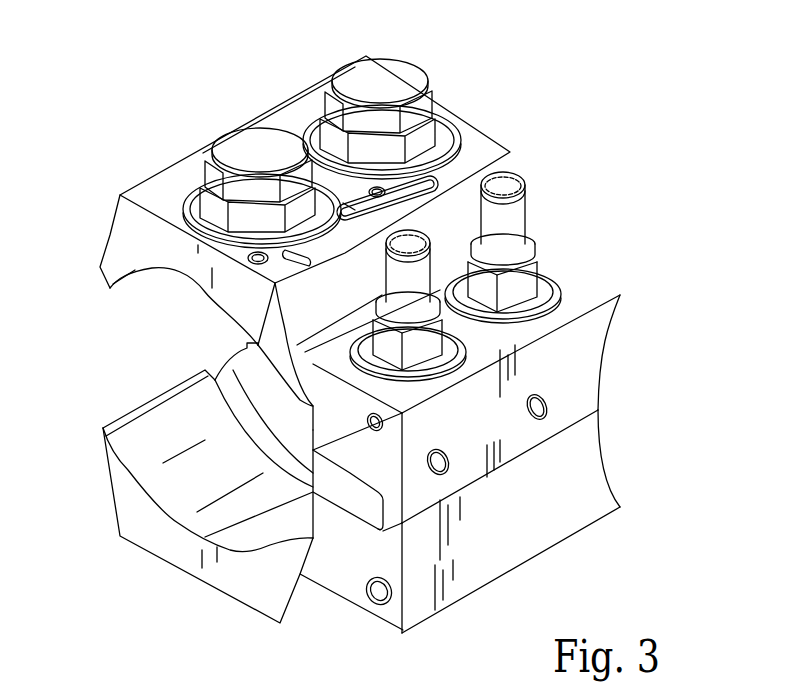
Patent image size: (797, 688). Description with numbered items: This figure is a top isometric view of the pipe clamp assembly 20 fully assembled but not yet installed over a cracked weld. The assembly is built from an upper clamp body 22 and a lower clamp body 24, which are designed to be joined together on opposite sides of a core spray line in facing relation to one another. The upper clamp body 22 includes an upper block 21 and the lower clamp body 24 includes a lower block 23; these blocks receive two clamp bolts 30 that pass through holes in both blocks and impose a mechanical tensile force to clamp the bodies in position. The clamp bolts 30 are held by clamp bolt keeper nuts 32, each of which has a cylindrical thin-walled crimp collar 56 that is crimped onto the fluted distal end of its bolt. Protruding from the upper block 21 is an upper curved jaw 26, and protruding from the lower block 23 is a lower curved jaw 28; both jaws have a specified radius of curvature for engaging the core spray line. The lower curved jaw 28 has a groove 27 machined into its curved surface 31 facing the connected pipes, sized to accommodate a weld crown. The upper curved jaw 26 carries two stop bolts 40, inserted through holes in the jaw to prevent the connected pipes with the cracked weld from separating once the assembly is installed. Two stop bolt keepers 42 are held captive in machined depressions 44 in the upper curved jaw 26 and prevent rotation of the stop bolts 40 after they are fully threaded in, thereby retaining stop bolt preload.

The pipe clamp assembly 20 is at (667, 438).
The upper block 21 is at (583, 372).
The upper clamp body 22 is at (507, 443).
The lower block 23 is at (480, 575).
The lower clamp body 24 is at (133, 523).
The upper curved jaw 26 is at (183, 250).
The groove 27 is at (305, 490).
The lower curved jaw 28 is at (117, 478).
The clamp bolts 30 is at (413, 240).
The curved surface 31 is at (205, 537).
The clamp bolt keeper nuts 32 is at (427, 347).
The stop bolts 40 is at (391, 62).
The stop bolt keepers 42 is at (300, 107).
The machined depressions 44 is at (290, 257).
The crimp collar 56 is at (515, 220).